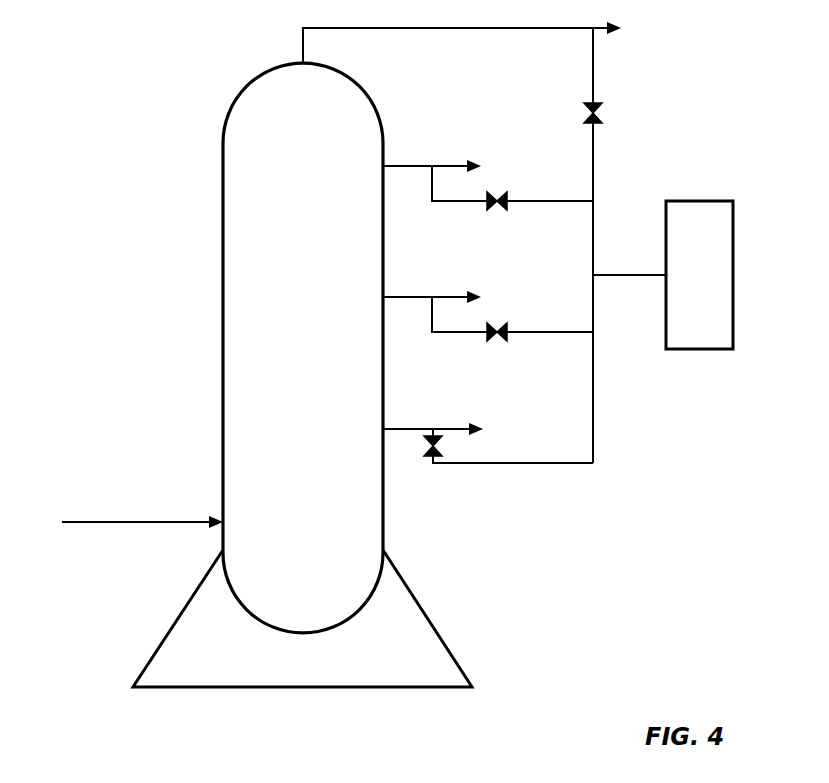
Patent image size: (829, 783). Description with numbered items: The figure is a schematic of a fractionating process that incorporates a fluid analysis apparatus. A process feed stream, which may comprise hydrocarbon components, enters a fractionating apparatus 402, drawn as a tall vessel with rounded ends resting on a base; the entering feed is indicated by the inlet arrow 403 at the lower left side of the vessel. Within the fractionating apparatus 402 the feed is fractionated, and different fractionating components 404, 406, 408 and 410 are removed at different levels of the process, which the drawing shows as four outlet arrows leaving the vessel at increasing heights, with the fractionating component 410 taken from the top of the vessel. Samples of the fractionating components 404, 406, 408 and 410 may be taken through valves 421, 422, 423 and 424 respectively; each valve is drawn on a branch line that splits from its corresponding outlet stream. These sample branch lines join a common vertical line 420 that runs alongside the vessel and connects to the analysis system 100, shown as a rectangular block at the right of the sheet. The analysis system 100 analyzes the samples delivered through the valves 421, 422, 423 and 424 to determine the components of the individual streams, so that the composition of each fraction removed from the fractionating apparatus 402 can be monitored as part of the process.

The analysis system 100 is at (735, 242).
The fractionating apparatus 402 is at (383, 527).
The inlet stream 403 is at (142, 507).
The fractionating component 404 is at (488, 441).
The fractionating component 406 is at (488, 309).
The fractionating component 408 is at (488, 178).
The fractionating component 410 is at (489, 40).
The line 420 is at (593, 413).
The valve 421 is at (421, 450).
The valve 422 is at (500, 343).
The valve 423 is at (500, 212).
The valve 424 is at (603, 113).